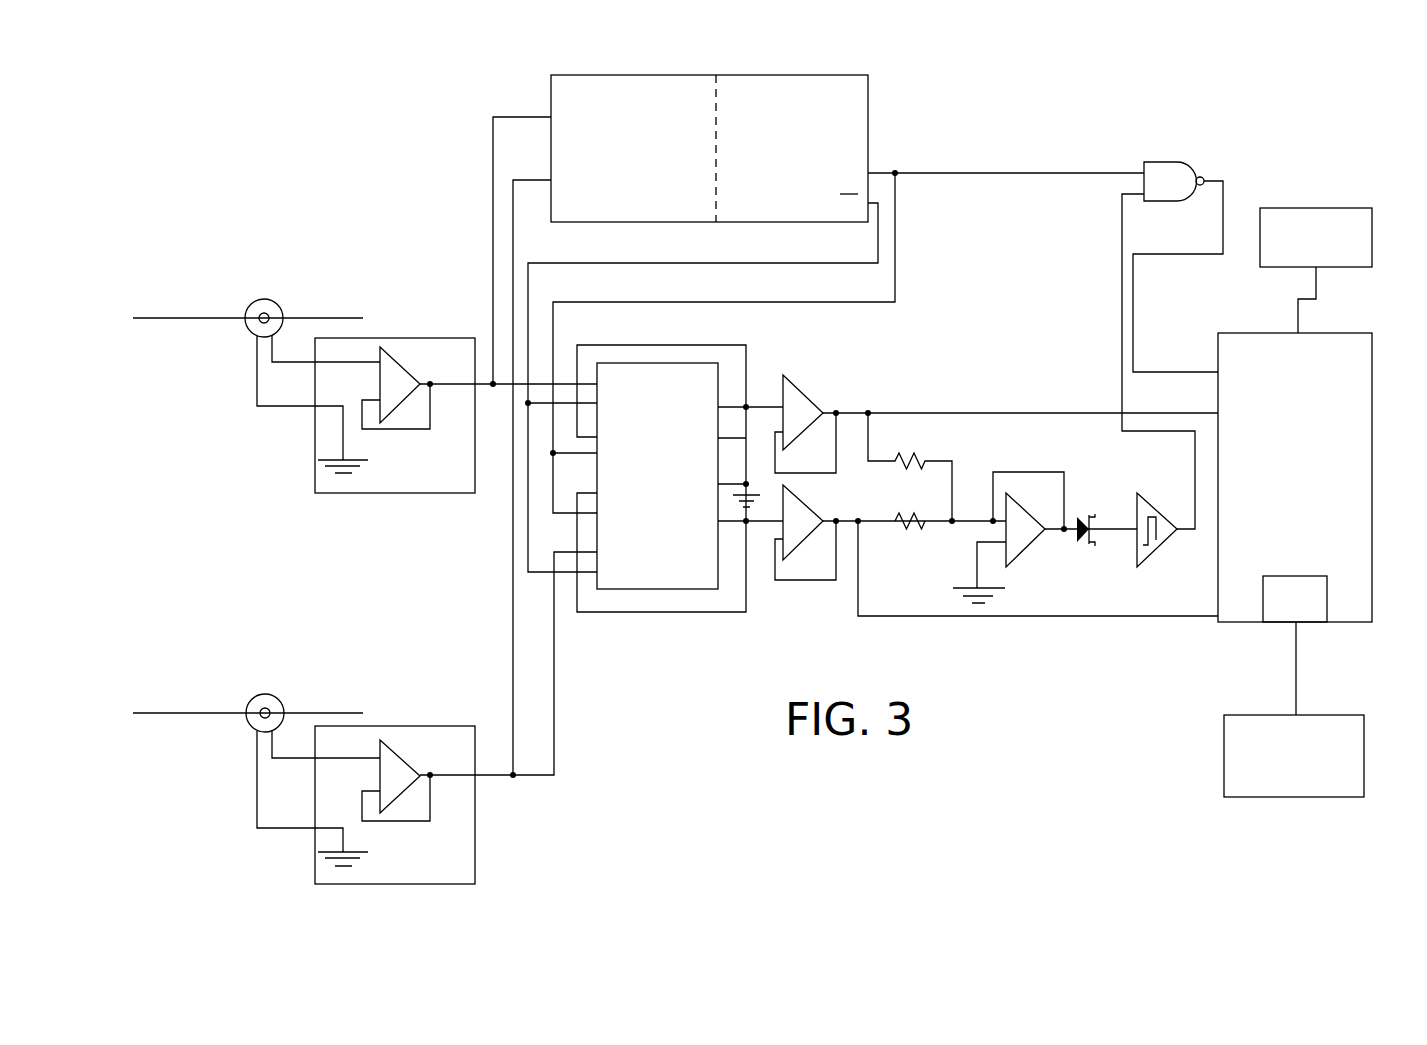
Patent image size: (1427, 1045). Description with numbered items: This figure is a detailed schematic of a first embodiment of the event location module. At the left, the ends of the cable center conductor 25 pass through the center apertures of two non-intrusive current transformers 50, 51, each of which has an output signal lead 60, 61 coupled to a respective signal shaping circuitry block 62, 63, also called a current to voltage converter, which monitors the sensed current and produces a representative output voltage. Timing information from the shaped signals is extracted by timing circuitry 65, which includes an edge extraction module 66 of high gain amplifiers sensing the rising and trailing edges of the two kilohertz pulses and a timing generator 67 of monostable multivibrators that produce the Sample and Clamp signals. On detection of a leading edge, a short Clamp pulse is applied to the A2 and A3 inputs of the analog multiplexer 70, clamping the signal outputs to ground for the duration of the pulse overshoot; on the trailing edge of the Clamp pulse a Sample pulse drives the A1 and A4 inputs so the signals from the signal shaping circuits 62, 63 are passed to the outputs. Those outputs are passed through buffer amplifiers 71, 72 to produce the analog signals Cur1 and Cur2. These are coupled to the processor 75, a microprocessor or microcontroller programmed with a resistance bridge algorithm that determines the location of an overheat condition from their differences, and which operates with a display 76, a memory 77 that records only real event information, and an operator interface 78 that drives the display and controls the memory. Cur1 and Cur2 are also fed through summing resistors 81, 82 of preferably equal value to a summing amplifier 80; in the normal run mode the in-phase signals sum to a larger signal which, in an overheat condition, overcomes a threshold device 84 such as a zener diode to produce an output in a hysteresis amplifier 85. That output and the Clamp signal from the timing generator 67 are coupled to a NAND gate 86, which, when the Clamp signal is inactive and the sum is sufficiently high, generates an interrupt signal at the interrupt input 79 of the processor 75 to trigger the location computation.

The cable center conductor 25 is at (232, 317).
The current transformer 50 is at (278, 300).
The current transformer 51 is at (232, 712).
The output signal lead 60 is at (352, 388).
The output signal lead 61 is at (352, 780).
The signal shaping circuitry block 62 is at (368, 439).
The signal shaping circuitry block 63 is at (368, 831).
The timing circuitry 65 is at (672, 149).
The edge extraction module 66 is at (617, 210).
The timing generator 67 is at (776, 210).
The analog multiplexer 70 is at (655, 590).
The buffer amplifier 71 is at (818, 397).
The buffer amplifier 72 is at (812, 535).
The processor 75 is at (1283, 449).
The display 76 is at (1318, 207).
The memory 77 is at (1295, 599).
The operator interface 78 is at (1248, 715).
The interrupt input 79 is at (1198, 370).
The summing amplifier 80 is at (1026, 546).
The summing resistor 81 is at (922, 455).
The summing resistor 82 is at (922, 535).
The threshold device 84 is at (1087, 513).
The hysteresis amplifier 85 is at (1166, 505).
The NAND gate 86 is at (1160, 160).